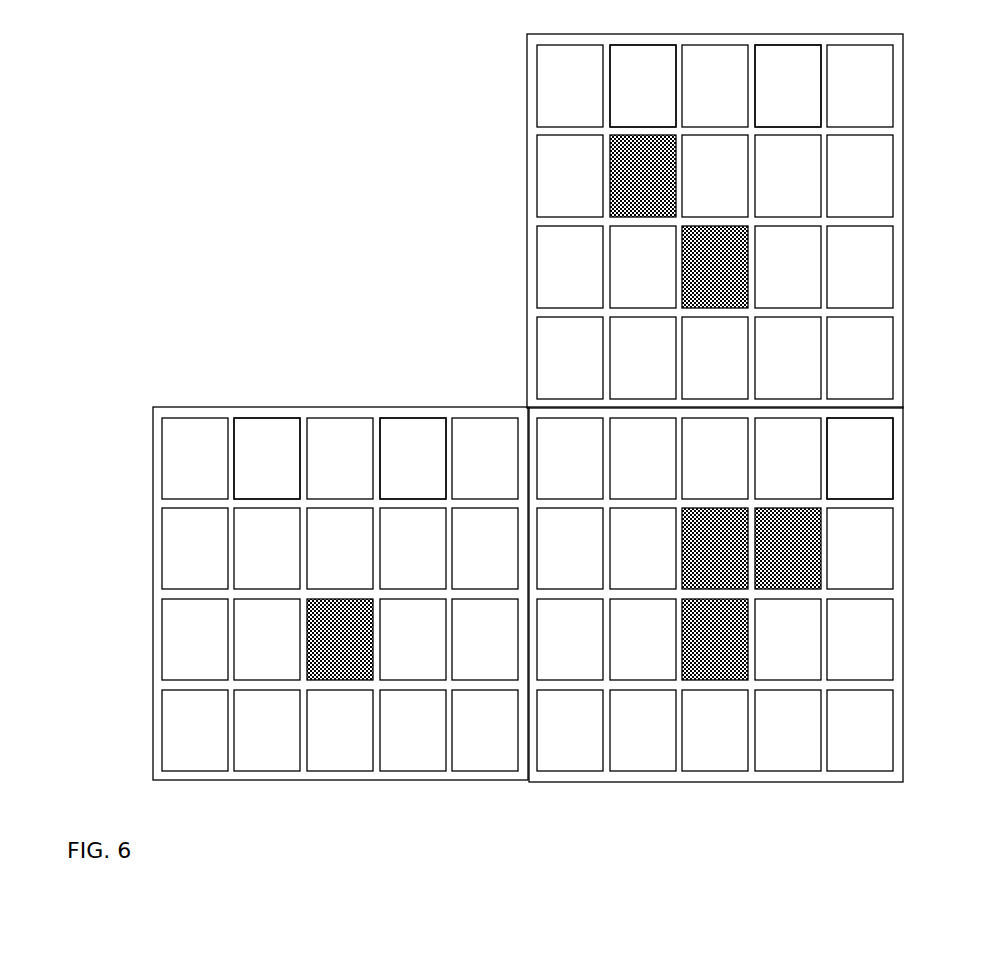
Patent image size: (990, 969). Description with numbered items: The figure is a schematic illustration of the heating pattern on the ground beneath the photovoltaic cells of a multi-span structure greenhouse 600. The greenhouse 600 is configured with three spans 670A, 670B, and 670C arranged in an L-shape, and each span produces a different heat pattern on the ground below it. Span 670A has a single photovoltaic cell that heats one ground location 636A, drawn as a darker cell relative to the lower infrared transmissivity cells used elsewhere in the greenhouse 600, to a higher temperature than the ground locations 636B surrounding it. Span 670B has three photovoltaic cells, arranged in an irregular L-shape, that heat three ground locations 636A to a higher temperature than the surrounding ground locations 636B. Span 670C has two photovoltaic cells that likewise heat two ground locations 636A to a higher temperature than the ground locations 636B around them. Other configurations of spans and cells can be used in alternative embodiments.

The multi-span structure greenhouse 600 is at (330, 253).
The span 670A is at (342, 780).
The span 670B is at (715, 782).
The span 670C is at (903, 225).
The ground location 636A is at (564, 407).
The ground location 636B is at (563, 272).